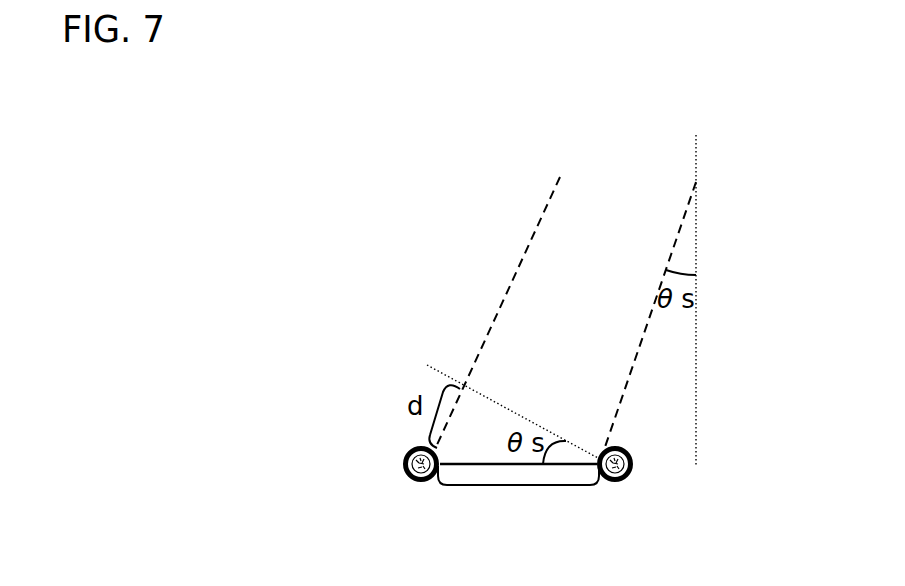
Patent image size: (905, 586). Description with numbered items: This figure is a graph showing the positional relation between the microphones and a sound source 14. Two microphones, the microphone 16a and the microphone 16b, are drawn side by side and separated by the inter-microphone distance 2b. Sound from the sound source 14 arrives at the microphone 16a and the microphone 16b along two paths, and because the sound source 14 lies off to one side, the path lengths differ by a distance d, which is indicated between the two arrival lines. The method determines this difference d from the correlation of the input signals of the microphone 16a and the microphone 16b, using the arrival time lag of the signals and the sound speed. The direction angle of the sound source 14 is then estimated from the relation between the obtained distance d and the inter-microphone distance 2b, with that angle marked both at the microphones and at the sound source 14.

The sound source 14 is at (716, 281).
The microphone 16a is at (416, 502).
The microphone 16b is at (667, 502).
The inter-microphone distance 2b is at (518, 495).